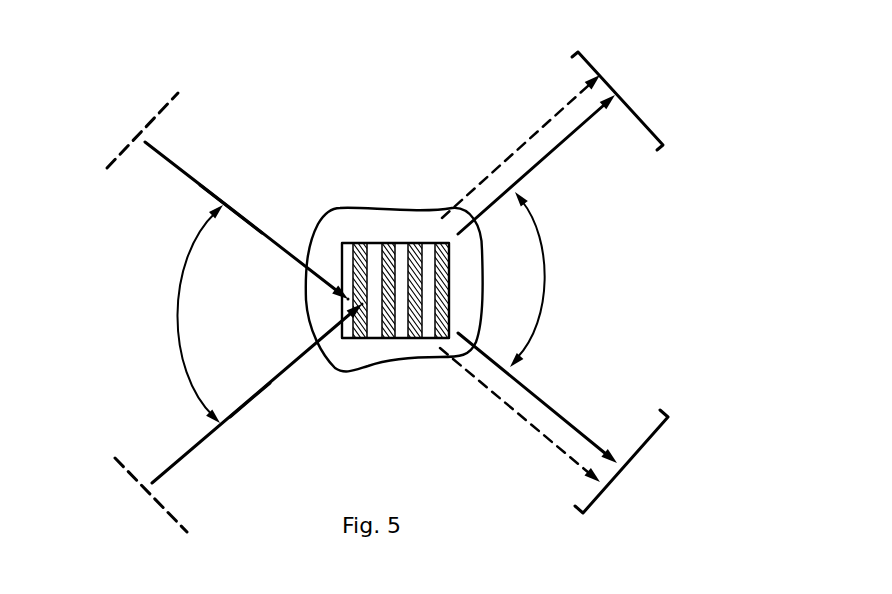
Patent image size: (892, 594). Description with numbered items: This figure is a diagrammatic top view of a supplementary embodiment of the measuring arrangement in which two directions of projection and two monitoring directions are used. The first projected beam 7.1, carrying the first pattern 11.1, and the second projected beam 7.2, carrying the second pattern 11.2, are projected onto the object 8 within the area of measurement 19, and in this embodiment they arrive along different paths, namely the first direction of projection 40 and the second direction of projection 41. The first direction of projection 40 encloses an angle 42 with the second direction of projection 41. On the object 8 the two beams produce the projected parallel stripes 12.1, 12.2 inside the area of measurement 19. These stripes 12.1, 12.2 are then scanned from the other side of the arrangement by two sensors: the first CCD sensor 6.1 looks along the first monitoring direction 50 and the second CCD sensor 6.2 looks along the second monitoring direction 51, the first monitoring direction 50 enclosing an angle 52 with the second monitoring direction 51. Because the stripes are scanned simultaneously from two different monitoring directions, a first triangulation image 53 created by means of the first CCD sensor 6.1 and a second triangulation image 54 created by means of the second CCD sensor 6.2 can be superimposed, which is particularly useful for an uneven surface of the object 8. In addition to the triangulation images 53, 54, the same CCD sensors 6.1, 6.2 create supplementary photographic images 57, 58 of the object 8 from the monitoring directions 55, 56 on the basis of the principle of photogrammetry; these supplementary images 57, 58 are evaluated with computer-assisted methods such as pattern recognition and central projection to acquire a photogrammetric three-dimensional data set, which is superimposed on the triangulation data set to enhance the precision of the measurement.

The object 8 is at (358, 222).
The area of measurement 19 is at (415, 243).
The second pattern 11.2 is at (162, 108).
The first pattern 11.1 is at (115, 458).
The second projected beam 7.2 is at (192, 177).
The first projected beam 7.1 is at (183, 458).
The second direction of projection 41 is at (262, 230).
The first direction of projection 40 is at (250, 402).
The angle between directions of projection 42 is at (190, 273).
The first parallel stripe 12.1 is at (360, 335).
The second parallel stripe 12.2 is at (348, 318).
The second monitoring direction 51 is at (535, 167).
The second triangulation image 54 is at (572, 73).
The second photogrammetric monitoring direction 56 is at (512, 153).
The second supplementary image 58 is at (575, 85).
The second CCD sensor 6.2 is at (648, 123).
The angle between monitoring directions 52 is at (543, 277).
The first monitoring direction 50 is at (533, 392).
The first triangulation image 53 is at (620, 430).
The first photogrammetric monitoring direction 55 is at (492, 390).
The first supplementary image 57 is at (585, 498).
The first CCD sensor 6.1 is at (653, 433).